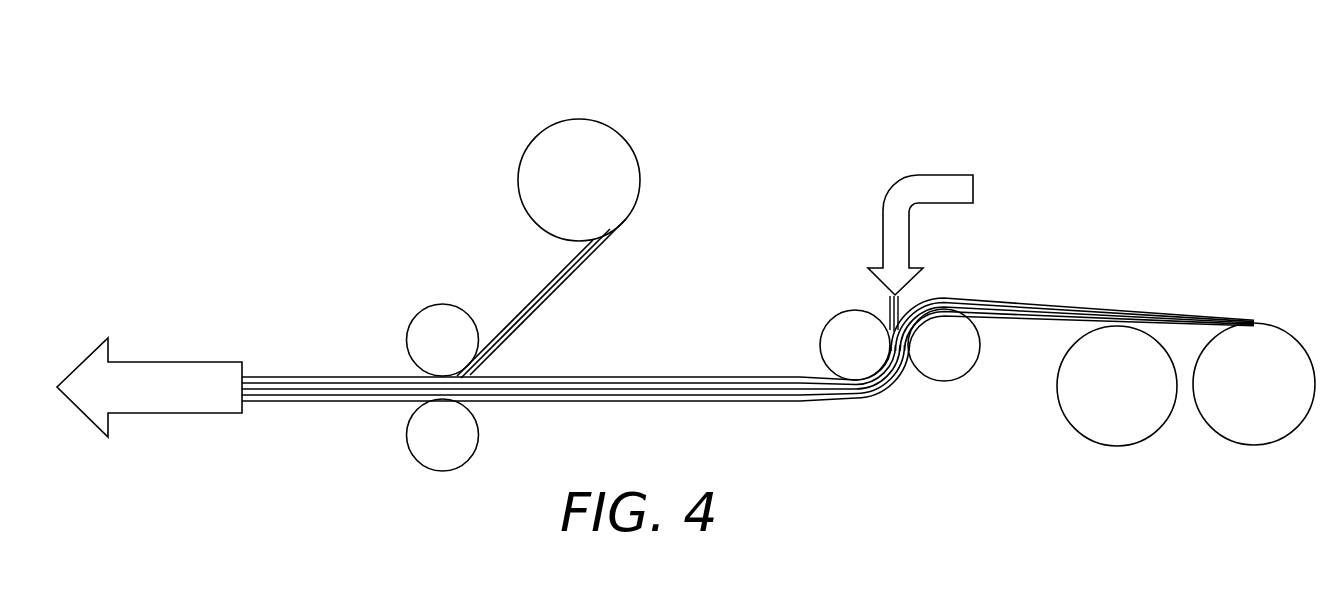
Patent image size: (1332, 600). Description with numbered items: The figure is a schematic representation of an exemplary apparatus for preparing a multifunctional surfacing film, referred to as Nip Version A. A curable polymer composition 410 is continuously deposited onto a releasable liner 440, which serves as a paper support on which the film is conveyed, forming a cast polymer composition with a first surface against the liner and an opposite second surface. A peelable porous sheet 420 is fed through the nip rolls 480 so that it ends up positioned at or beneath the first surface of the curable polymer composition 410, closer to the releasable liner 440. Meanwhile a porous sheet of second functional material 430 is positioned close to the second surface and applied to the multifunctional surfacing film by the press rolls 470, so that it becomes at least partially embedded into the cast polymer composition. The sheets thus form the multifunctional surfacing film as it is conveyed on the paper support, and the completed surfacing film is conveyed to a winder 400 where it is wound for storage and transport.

The winder 400 is at (185, 401).
The curable polymer composition 410 is at (890, 315).
The peelable porous sheet 420 is at (1265, 428).
The porous sheet of second functional material 430 is at (565, 157).
The releasable liner 440 is at (1117, 420).
The press rolls 470 is at (435, 318).
The nip rolls 480 is at (838, 335).